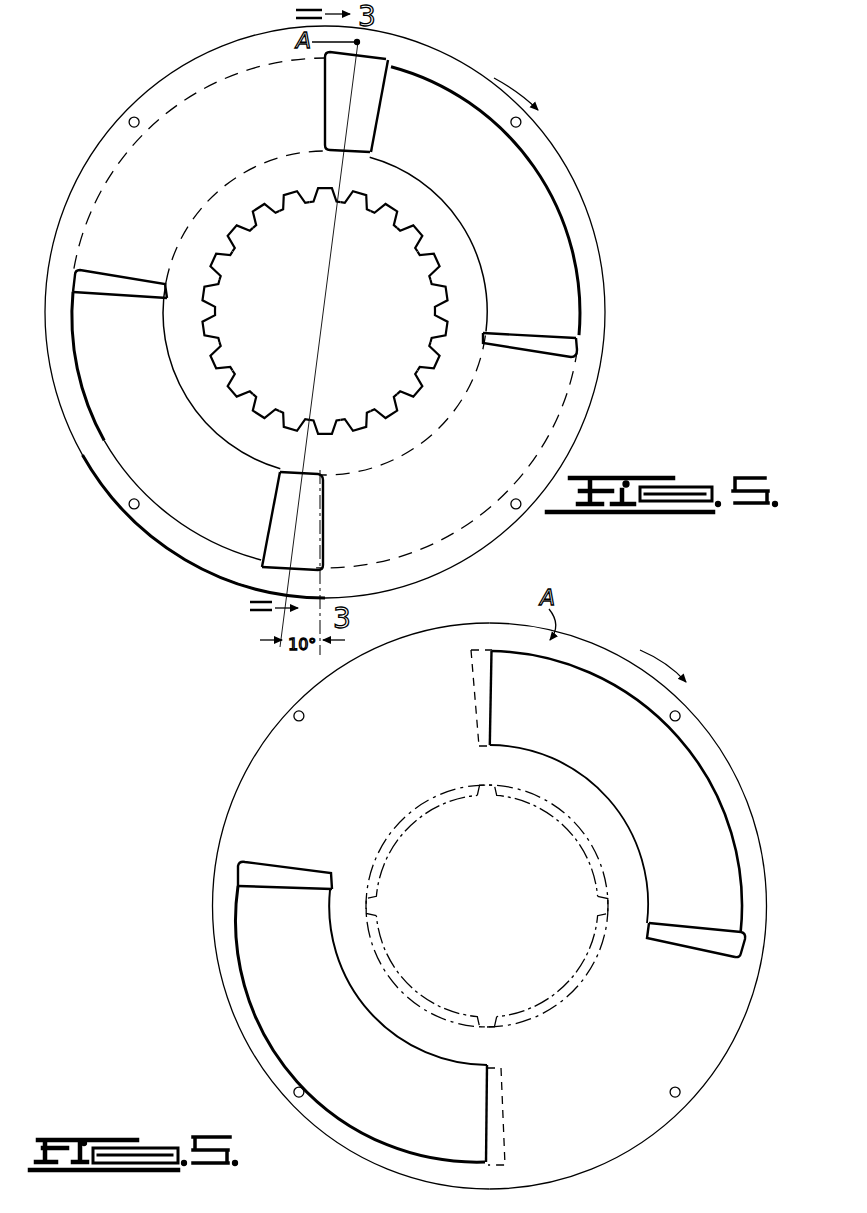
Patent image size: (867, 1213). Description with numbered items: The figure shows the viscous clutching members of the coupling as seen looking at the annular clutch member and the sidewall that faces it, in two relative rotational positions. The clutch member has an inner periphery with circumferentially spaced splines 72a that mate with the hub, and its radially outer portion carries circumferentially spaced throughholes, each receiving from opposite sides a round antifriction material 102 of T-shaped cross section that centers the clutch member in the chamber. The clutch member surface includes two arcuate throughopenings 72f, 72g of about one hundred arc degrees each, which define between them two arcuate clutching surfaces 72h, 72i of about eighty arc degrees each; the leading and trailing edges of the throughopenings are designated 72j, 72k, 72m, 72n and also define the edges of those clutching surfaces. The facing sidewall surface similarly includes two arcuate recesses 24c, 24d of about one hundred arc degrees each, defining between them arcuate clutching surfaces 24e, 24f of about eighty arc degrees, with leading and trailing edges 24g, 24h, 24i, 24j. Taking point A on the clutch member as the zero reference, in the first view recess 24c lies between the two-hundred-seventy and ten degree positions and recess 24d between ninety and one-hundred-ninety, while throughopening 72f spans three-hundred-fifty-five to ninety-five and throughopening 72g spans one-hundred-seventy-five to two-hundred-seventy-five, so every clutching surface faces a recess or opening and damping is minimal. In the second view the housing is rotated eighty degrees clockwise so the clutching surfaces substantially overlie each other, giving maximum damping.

In FIG. 5, the round antifriction material 102 is at (128, 120).
In FIG. 6, the round antifriction material 102 is at (292, 1091).
In FIG. 5, the splines 72a is at (272, 212).
In FIG. 5, the throughopening 72f is at (556, 210).
In FIG. 6, the throughopening 72f is at (683, 745).
In FIG. 5, the throughopening 72g is at (120, 460).
In FIG. 6, the throughopening 72g is at (250, 966).
In FIG. 5, the arcuate clutching surface 72h is at (470, 486).
In FIG. 6, the arcuate clutching surface 72h is at (678, 1061).
In FIG. 5, the arcuate clutching surface 72i is at (205, 186).
In FIG. 6, the arcuate clutching surface 72i is at (355, 786).
In FIG. 5, the leading/trailing edge 72j is at (322, 86).
In FIG. 6, the leading/trailing edge 72j is at (490, 748).
In FIG. 5, the leading/trailing edge 72k is at (530, 352).
In FIG. 6, the leading/trailing edge 72k is at (690, 924).
In FIG. 5, the leading/trailing edge 72m is at (328, 513).
In FIG. 6, the leading/trailing edge 72m is at (490, 1078).
In FIG. 5, the leading/trailing edge 72n is at (110, 276).
In FIG. 6, the leading/trailing edge 72n is at (268, 866).
In FIG. 5, the arcuate recess 24c is at (323, 121).
In FIG. 6, the arcuate recess 24c is at (578, 676).
In FIG. 5, the arcuate recess 24d is at (562, 344).
In FIG. 6, the arcuate recess 24d is at (386, 1045).
In FIG. 5, the arcuate clutching surface 24e is at (510, 202).
In FIG. 5, the arcuate clutching surface 24f is at (165, 426).
In FIG. 5, the leading/trailing edge 24g is at (108, 294).
In FIG. 6, the leading/trailing edge 24g is at (470, 690).
In FIG. 5, the leading/trailing edge 24h is at (375, 100).
In FIG. 6, the leading/trailing edge 24h is at (676, 942).
In FIG. 5, the leading/trailing edge 24i is at (519, 332).
In FIG. 6, the leading/trailing edge 24i is at (503, 1112).
In FIG. 5, the leading/trailing edge 24j is at (270, 506).
In FIG. 6, the leading/trailing edge 24j is at (236, 897).